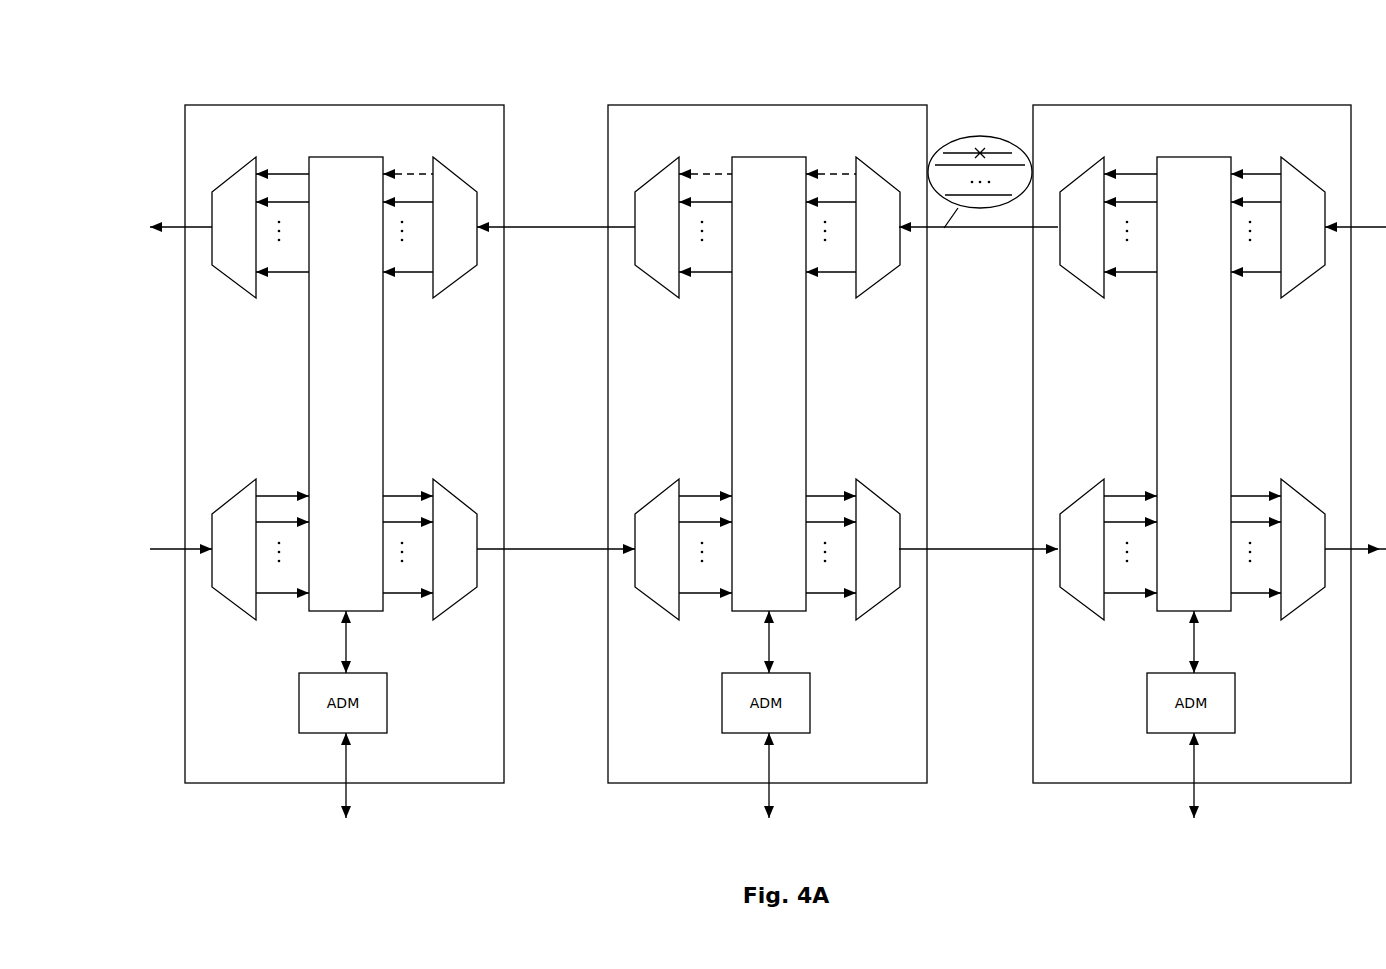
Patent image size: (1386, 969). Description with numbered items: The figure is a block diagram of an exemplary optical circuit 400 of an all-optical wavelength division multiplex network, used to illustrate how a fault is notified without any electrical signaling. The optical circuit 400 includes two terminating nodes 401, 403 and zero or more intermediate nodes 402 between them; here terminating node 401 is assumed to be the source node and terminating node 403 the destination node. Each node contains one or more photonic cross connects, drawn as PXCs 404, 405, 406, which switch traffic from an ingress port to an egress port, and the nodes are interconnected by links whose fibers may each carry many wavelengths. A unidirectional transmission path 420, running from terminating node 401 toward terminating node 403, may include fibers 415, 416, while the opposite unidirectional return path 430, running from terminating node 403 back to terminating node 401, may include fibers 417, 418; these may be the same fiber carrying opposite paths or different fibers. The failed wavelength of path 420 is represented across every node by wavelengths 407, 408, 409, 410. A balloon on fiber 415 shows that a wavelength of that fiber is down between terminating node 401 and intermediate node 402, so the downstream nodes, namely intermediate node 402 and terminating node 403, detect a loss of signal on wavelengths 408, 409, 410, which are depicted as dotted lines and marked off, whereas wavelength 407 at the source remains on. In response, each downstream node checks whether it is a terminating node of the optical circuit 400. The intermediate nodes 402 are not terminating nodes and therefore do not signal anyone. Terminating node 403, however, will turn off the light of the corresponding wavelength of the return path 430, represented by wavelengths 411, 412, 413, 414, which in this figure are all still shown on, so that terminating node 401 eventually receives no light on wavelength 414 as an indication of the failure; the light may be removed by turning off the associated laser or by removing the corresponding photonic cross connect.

The optical circuit 400 is at (1213, 39).
The terminating node 401 is at (1192, 444).
The intermediate node 402 is at (767, 444).
The terminating node 403 is at (344, 444).
The photonic cross connect 404 is at (1194, 384).
The photonic cross connect 405 is at (769, 384).
The photonic cross connect 406 is at (346, 384).
The wavelength 407 is at (1138, 140).
The wavelength 408 is at (840, 140).
The wavelength 409 is at (715, 140).
The wavelength 410 is at (413, 140).
The wavelength 411 is at (413, 623).
The wavelength 412 is at (693, 628).
The wavelength 413 is at (827, 623).
The wavelength 414 is at (1118, 628).
The fiber 415 is at (963, 232).
The fiber 416 is at (557, 229).
The fiber 417 is at (538, 550).
The fiber 418 is at (960, 550).
The unidirectional path 420 is at (656, 58).
The unidirectional path 430 is at (562, 879).